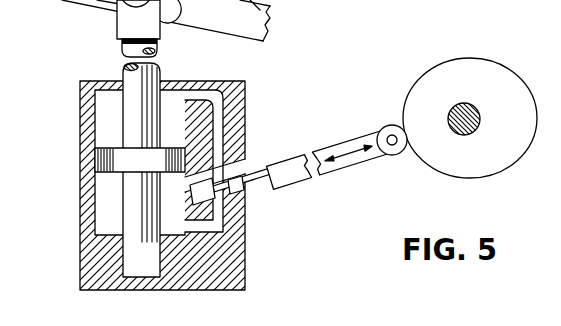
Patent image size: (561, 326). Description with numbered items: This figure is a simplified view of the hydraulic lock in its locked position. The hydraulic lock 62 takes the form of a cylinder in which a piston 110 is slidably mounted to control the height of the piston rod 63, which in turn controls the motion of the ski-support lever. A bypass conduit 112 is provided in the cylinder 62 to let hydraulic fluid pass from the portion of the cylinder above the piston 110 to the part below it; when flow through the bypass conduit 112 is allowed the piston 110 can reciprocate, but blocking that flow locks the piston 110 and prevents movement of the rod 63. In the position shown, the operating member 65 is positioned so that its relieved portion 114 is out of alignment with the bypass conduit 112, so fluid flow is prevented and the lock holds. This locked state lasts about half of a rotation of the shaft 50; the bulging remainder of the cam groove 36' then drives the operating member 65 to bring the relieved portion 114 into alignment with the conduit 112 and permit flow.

The cam groove remainder 36' is at (465, 100).
The shaft 50 is at (455, 135).
The hydraulic lock 62 is at (80, 109).
The piston rod 63 is at (125, 78).
The operating member 65 is at (350, 135).
The piston 110 is at (123, 152).
The bypass conduit 112 is at (217, 122).
The relieved portion 114 is at (242, 190).